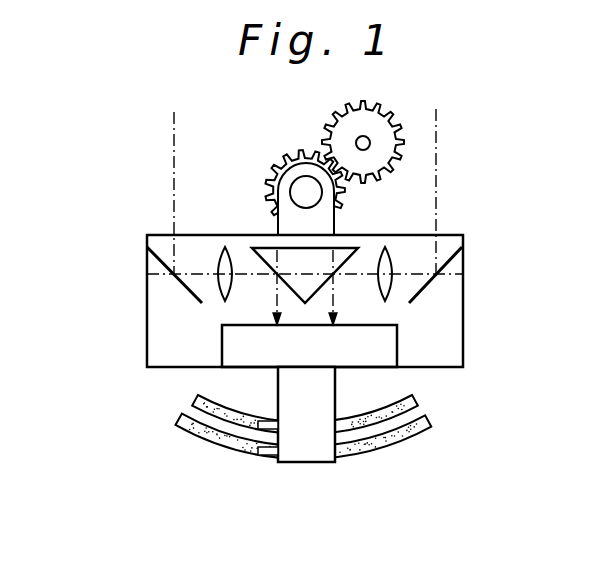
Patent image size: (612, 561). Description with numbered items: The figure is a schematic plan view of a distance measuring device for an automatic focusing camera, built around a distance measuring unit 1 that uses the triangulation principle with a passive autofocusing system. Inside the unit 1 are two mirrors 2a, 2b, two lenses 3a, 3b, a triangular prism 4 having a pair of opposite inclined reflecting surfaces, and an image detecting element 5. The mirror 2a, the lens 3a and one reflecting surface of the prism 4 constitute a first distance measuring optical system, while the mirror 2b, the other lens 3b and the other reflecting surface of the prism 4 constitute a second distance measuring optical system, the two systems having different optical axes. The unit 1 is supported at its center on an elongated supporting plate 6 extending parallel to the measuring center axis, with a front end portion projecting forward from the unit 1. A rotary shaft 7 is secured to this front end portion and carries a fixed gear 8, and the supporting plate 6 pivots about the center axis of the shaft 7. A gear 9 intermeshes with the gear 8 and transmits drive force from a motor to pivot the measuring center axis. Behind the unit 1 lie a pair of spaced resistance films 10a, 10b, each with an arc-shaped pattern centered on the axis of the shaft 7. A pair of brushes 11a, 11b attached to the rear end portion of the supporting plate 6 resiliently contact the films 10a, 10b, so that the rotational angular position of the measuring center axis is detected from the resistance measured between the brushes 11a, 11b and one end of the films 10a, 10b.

The distance measuring unit 1 is at (463, 340).
The mirror 2a is at (162, 266).
The mirror 2b is at (448, 264).
The lens 3a is at (219, 257).
The lens 3b is at (388, 257).
The triangular prism 4 is at (264, 248).
The image detecting element 5 is at (357, 367).
The supporting plate 6 is at (278, 391).
The rotary shaft 7 is at (312, 198).
The gear 8 is at (292, 156).
The gear 9 is at (393, 120).
The resistance film 10a is at (198, 404).
The resistance film 10b is at (182, 422).
The brush 11a is at (258, 423).
The brush 11b is at (258, 455).